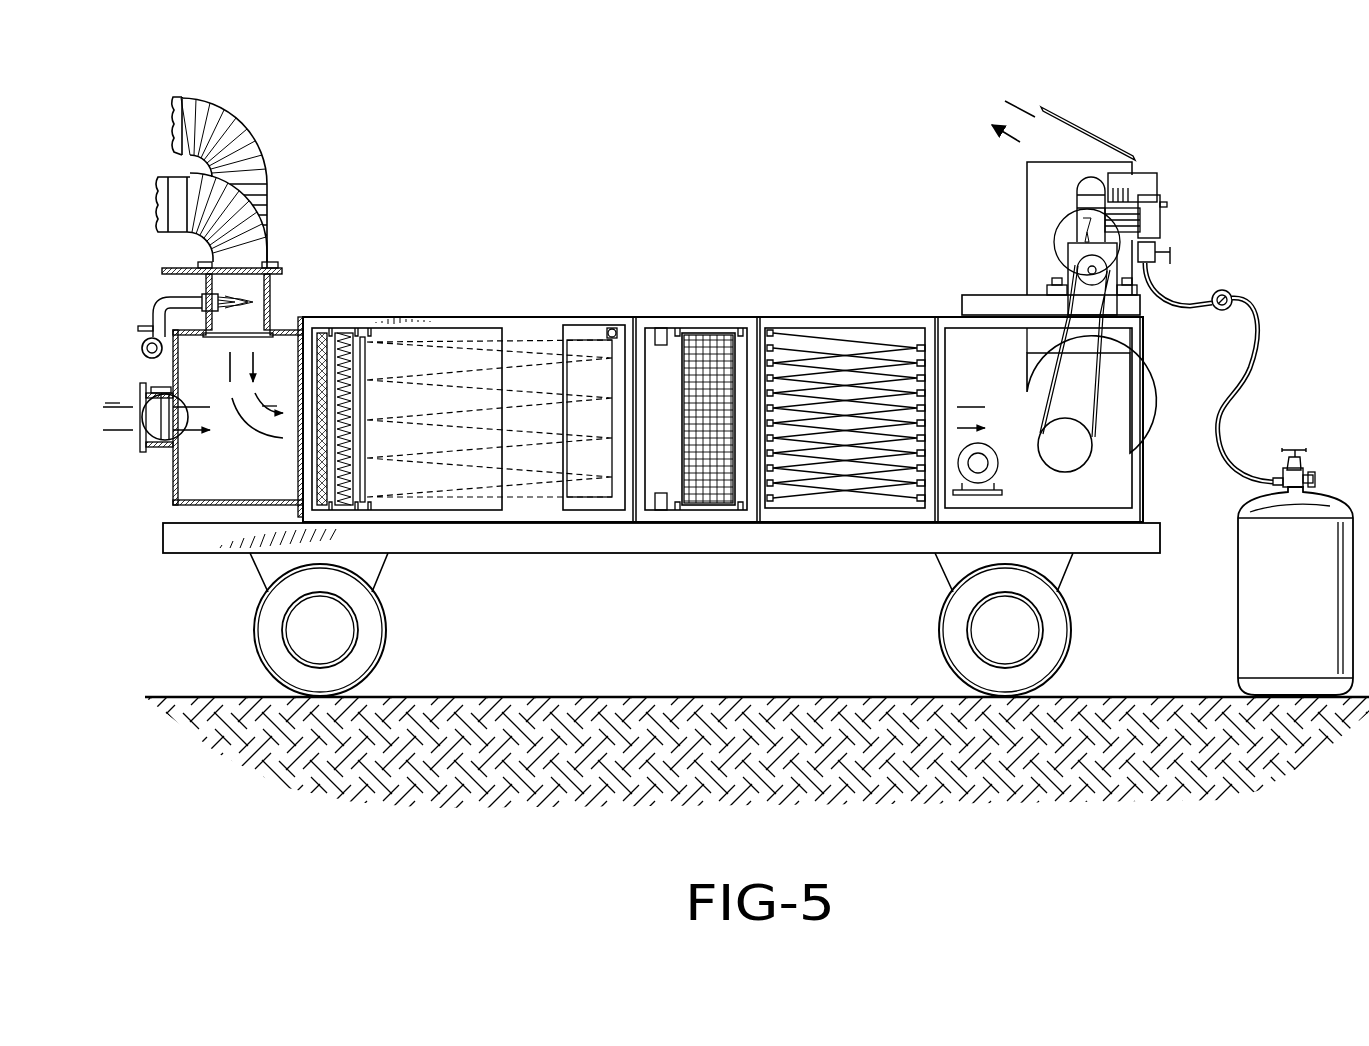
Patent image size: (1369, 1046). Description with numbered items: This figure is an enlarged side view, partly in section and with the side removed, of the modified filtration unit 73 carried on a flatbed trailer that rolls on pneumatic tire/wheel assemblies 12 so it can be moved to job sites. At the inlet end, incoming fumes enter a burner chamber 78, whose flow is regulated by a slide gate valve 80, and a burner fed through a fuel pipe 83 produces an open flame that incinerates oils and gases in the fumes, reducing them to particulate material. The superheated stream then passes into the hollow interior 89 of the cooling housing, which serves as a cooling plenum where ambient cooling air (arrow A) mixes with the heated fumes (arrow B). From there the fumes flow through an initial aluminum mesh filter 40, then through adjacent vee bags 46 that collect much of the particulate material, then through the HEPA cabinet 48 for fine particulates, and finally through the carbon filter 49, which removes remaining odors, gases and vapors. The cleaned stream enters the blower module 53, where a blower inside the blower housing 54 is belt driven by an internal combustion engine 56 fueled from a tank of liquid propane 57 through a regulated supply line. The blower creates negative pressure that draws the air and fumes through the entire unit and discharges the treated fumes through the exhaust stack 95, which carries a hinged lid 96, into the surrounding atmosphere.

The pneumatic tire/wheel assemblies 12 is at (960, 628).
The aluminum mesh filter 40 is at (343, 338).
The vee bags 46 is at (456, 340).
The HEPA cabinet 48 is at (705, 335).
The carbon filter 49 is at (836, 313).
The blower module 53 is at (1147, 356).
The blower housing 54 is at (1107, 477).
The internal combustion engine 56 is at (1152, 183).
The tank of liquid propane 57 is at (1309, 603).
The modified filtration unit 73 is at (601, 296).
The burner chamber 78 is at (271, 288).
The slide gate valve 80 is at (179, 268).
The fuel pipe 83 is at (162, 300).
The hollow interior 89 is at (218, 458).
The exhaust stack 95 is at (1037, 197).
The hinged lid 96 is at (1073, 118).